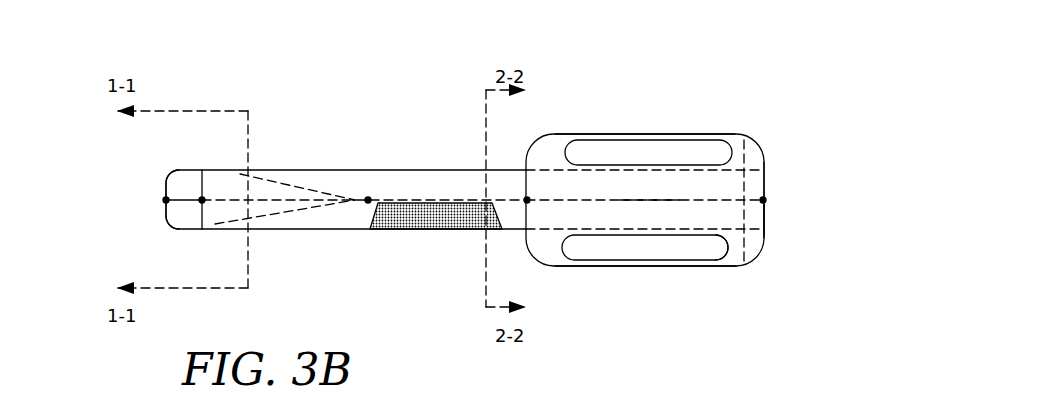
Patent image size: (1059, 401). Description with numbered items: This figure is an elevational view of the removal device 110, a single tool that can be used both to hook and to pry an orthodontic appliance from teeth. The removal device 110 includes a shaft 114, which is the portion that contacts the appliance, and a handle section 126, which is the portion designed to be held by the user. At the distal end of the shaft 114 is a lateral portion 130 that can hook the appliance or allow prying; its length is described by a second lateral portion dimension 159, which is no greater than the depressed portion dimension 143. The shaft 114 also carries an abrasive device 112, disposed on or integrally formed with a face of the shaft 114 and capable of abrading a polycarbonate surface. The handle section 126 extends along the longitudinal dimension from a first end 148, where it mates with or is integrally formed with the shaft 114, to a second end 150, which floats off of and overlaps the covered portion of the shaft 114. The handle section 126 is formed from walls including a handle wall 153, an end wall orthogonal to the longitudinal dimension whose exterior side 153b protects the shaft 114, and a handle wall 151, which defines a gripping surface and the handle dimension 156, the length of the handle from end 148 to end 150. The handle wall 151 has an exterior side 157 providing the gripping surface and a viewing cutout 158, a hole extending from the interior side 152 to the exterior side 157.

The removal device 110 is at (748, 32).
The abrasive device 112 is at (438, 217).
The shaft 114 is at (450, 143).
The handle section 126 is at (687, 117).
The lateral portion 130 is at (178, 173).
The depressed portion dimension 143 is at (243, 197).
The first end 148 is at (740, 268).
The second end 150 is at (570, 113).
The handle wall 151 is at (623, 210).
The interior side 152 is at (625, 160).
The handle wall 153 is at (745, 177).
The exterior side 153b is at (752, 220).
The handle dimension 156 is at (646, 204).
The exterior side 157 is at (582, 214).
The viewing cutout 158 is at (722, 264).
The second lateral portion dimension 159 is at (178, 197).